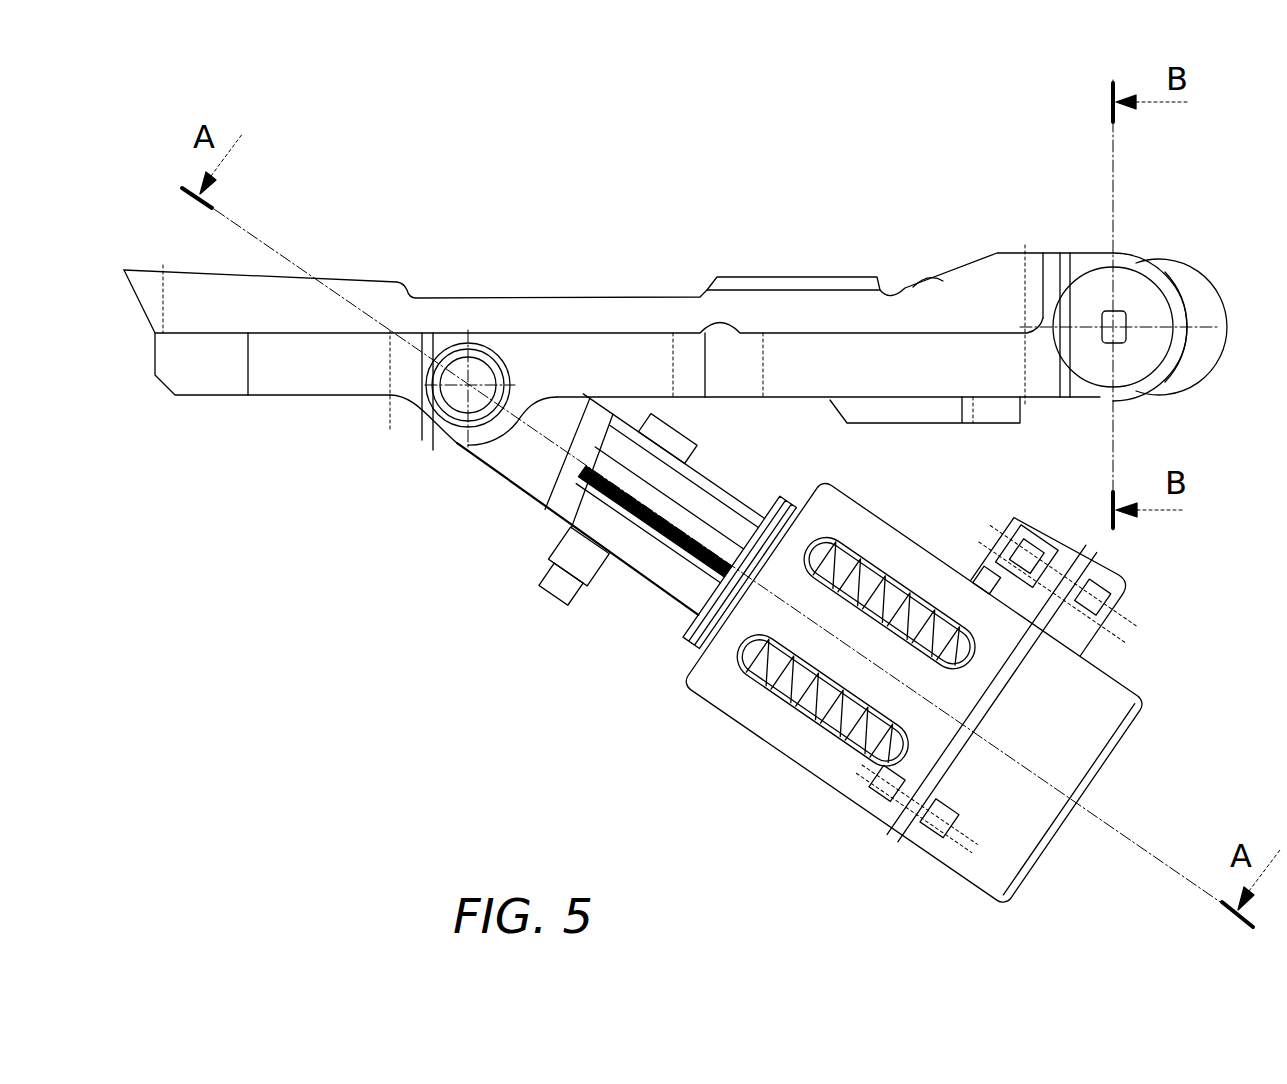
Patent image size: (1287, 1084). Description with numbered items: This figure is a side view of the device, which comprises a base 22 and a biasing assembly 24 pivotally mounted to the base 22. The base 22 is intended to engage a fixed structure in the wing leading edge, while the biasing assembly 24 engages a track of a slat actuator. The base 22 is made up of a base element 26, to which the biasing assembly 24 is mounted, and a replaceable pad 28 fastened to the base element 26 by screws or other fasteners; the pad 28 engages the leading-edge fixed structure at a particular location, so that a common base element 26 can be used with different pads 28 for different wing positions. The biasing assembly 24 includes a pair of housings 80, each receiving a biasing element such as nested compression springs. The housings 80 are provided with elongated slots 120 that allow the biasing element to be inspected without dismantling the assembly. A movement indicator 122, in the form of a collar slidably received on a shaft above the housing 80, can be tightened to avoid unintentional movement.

The base 22 is at (196, 437).
The biasing assembly 24 is at (856, 884).
The base element 26 is at (305, 390).
The replaceable pad 28 is at (800, 307).
The housing 80 is at (790, 745).
The elongated slot 120 is at (893, 566).
The movement indicator 122 is at (537, 600).